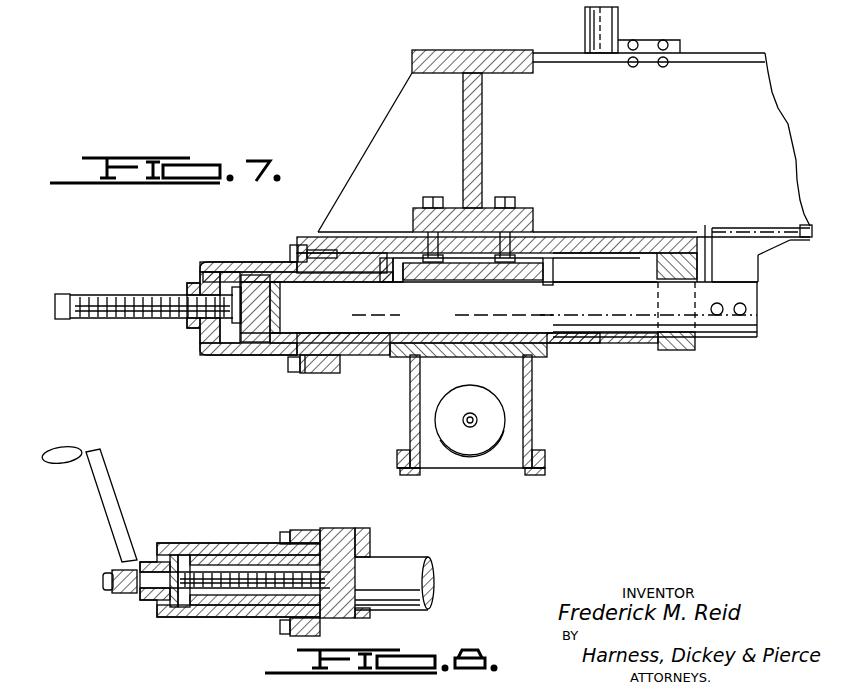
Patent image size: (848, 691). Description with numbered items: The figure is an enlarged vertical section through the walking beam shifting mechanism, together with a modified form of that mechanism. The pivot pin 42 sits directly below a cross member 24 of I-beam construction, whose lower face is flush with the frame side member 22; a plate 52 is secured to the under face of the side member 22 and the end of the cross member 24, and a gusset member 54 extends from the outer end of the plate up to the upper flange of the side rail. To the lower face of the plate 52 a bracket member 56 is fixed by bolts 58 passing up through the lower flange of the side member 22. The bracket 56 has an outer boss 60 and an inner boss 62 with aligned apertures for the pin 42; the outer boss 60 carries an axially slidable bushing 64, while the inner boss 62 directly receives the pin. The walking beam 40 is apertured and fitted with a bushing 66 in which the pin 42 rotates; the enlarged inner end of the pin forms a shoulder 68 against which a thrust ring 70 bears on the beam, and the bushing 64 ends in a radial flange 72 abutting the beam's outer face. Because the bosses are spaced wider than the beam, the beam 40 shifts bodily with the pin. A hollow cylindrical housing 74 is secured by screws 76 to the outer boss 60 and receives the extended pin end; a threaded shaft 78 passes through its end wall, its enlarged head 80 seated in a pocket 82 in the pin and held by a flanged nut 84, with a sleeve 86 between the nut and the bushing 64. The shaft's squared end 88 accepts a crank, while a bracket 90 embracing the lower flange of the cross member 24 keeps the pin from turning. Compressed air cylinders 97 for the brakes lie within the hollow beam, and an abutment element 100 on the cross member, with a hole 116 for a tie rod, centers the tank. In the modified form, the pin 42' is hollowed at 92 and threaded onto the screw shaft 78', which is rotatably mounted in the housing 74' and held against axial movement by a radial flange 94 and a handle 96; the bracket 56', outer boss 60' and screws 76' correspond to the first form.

In FIG. 7, the frame side member 22 is at (482, 136).
In FIG. 7, the cross member 24 is at (705, 53).
In FIG. 7, the walking beam 40 is at (535, 410).
In FIG. 7, the pivot pin 42 is at (648, 312).
In FIG. 7, the plate 52 is at (365, 232).
In FIG. 7, the gusset member 54 is at (396, 100).
In FIG. 7, the bracket member 56 is at (497, 235).
In FIG. 7, the bolts 58 is at (437, 197).
In FIG. 7, the outer boss 60 is at (334, 373).
In FIG. 7, the inner boss 62 is at (678, 350).
In FIG. 7, the bushing 64 is at (348, 280).
In FIG. 7, the bushing 66 is at (460, 280).
In FIG. 7, the shoulder 68 is at (553, 295).
In FIG. 7, the thrust ring 70 is at (555, 275).
In FIG. 7, the flange 72 is at (396, 307).
In FIG. 7, the hollow cylindrical housing 74 is at (220, 283).
In FIG. 7, the screws 76 is at (291, 235).
In FIG. 7, the threaded shaft 78 is at (151, 322).
In FIG. 7, the enlarged head 80 is at (270, 303).
In FIG. 7, the pocket 82 is at (283, 320).
In FIG. 7, the flanged nut 84 is at (200, 285).
In FIG. 7, the bushing or sleeve 86 is at (325, 318).
In FIG. 7, the squared end 88 is at (62, 294).
In FIG. 7, the bracket 90 is at (750, 270).
In FIG. 7, the compressed air cylinders 97 is at (474, 458).
In FIG. 7, the abutment element 100 is at (621, 22).
In FIG. 7, the hole 116 is at (592, 20).
In FIG. 8, the handle 96 is at (125, 596).
In FIG. 8, the radial flange 94 is at (176, 618).
In FIG. 8, the hollowed out portion 92 is at (244, 610).
In FIG. 8, the hollow cylindrical housing 74' is at (173, 551).
In FIG. 8, the screw shaft 78' is at (235, 553).
In FIG. 8, the screws 76' is at (293, 517).
In FIG. 8, the bracket member 56' is at (345, 554).
In FIG. 8, the outer boss 60' is at (329, 635).
In FIG. 8, the pivot pin 42' is at (418, 583).